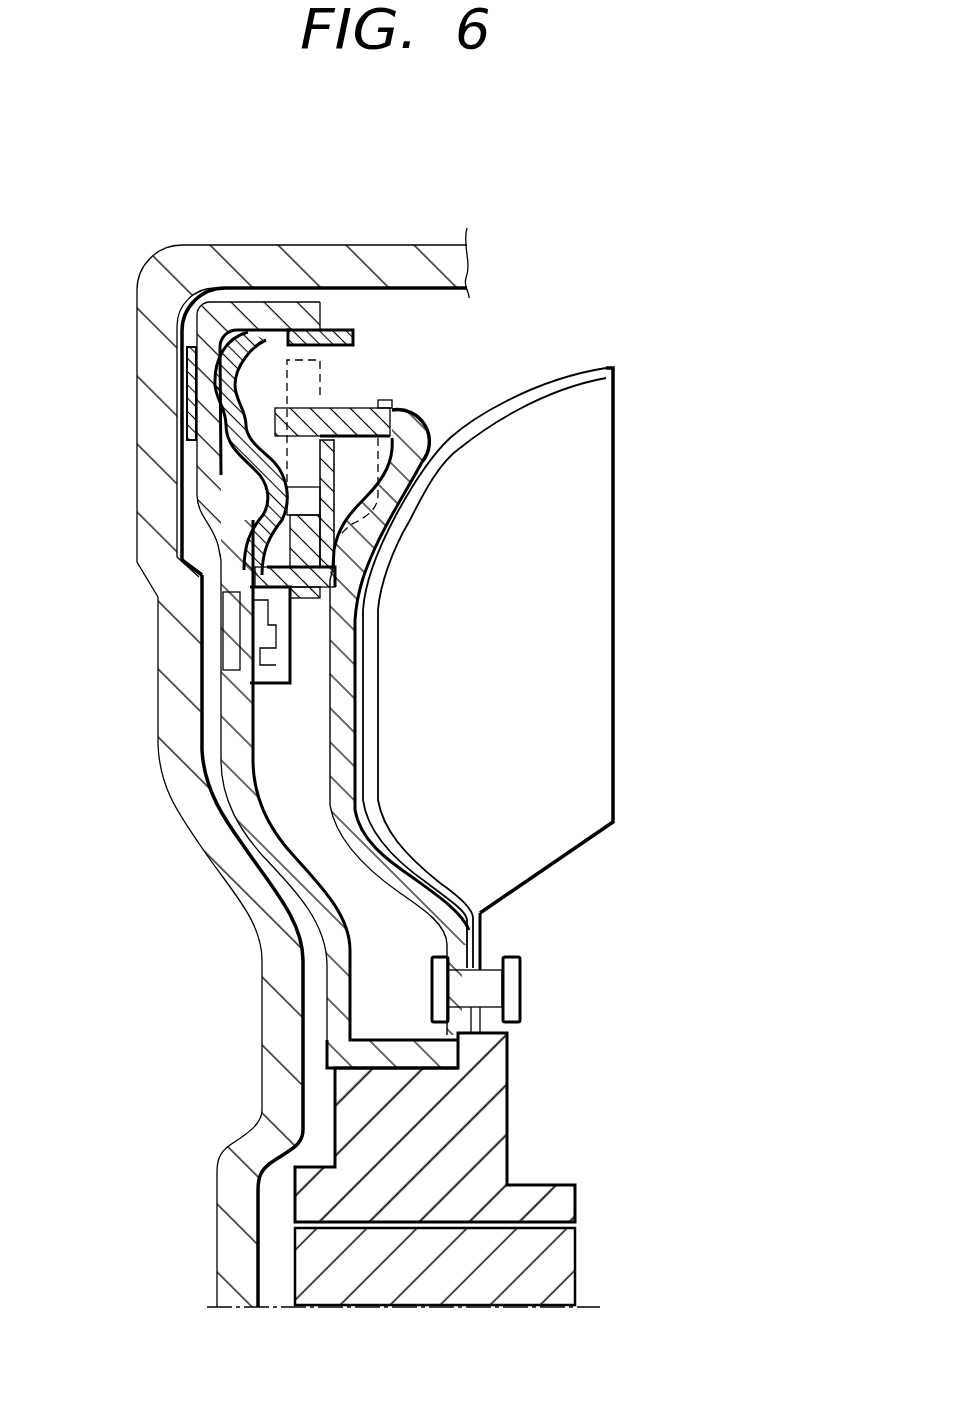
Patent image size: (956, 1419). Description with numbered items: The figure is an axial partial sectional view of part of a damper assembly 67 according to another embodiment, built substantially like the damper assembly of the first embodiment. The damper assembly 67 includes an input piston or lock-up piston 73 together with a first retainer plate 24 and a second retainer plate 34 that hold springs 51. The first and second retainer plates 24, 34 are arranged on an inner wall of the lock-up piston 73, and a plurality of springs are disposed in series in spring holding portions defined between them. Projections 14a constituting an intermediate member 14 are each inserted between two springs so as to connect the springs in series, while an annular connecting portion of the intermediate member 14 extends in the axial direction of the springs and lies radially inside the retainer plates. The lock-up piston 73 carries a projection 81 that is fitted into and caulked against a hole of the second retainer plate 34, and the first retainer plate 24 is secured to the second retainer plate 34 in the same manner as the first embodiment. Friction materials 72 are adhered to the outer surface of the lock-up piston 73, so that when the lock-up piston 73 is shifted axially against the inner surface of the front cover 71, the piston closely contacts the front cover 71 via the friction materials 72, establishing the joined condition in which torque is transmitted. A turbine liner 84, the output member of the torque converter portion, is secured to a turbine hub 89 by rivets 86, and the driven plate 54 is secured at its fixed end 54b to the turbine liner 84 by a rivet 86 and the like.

The intermediate member 14 is at (330, 543).
The projections 14a is at (325, 379).
The first retainer plate 24 is at (340, 328).
The second retainer plate 34 is at (330, 543).
The springs 51 is at (376, 398).
The driven plate 54 is at (420, 440).
The fixed end 54b is at (480, 915).
The damper assembly 67 is at (425, 410).
The front cover 71 is at (254, 258).
The friction materials 72 is at (195, 375).
The lock-up piston 73 is at (222, 300).
The projection 81 is at (290, 652).
The turbine liner 84 is at (590, 368).
The rivets 86 is at (522, 992).
The turbine hub 89 is at (465, 1107).